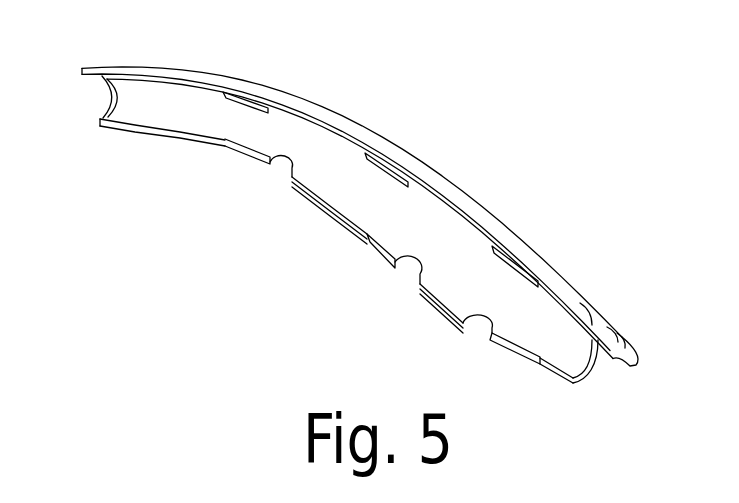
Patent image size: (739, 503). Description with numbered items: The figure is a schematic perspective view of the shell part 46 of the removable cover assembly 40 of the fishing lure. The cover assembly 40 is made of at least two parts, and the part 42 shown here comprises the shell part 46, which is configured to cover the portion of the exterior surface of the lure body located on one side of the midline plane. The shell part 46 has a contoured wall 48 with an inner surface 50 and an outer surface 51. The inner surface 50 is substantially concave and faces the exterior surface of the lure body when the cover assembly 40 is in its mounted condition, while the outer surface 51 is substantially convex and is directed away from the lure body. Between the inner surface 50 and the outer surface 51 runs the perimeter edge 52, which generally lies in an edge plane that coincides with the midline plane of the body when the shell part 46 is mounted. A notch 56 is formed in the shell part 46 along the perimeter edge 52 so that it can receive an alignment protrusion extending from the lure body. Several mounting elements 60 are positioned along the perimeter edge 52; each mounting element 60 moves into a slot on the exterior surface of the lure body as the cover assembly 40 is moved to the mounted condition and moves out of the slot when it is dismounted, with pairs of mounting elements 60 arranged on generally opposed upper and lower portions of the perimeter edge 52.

The removable cover assembly 40 is at (470, 138).
The part 42 is at (368, 137).
The shell part 46 is at (473, 198).
The contoured wall 48 is at (138, 127).
The inner surface 50 is at (387, 207).
The outer surface 51 is at (307, 103).
The perimeter edge 52 is at (443, 310).
The notch 56 is at (280, 168).
The mounting element 60 is at (245, 150).